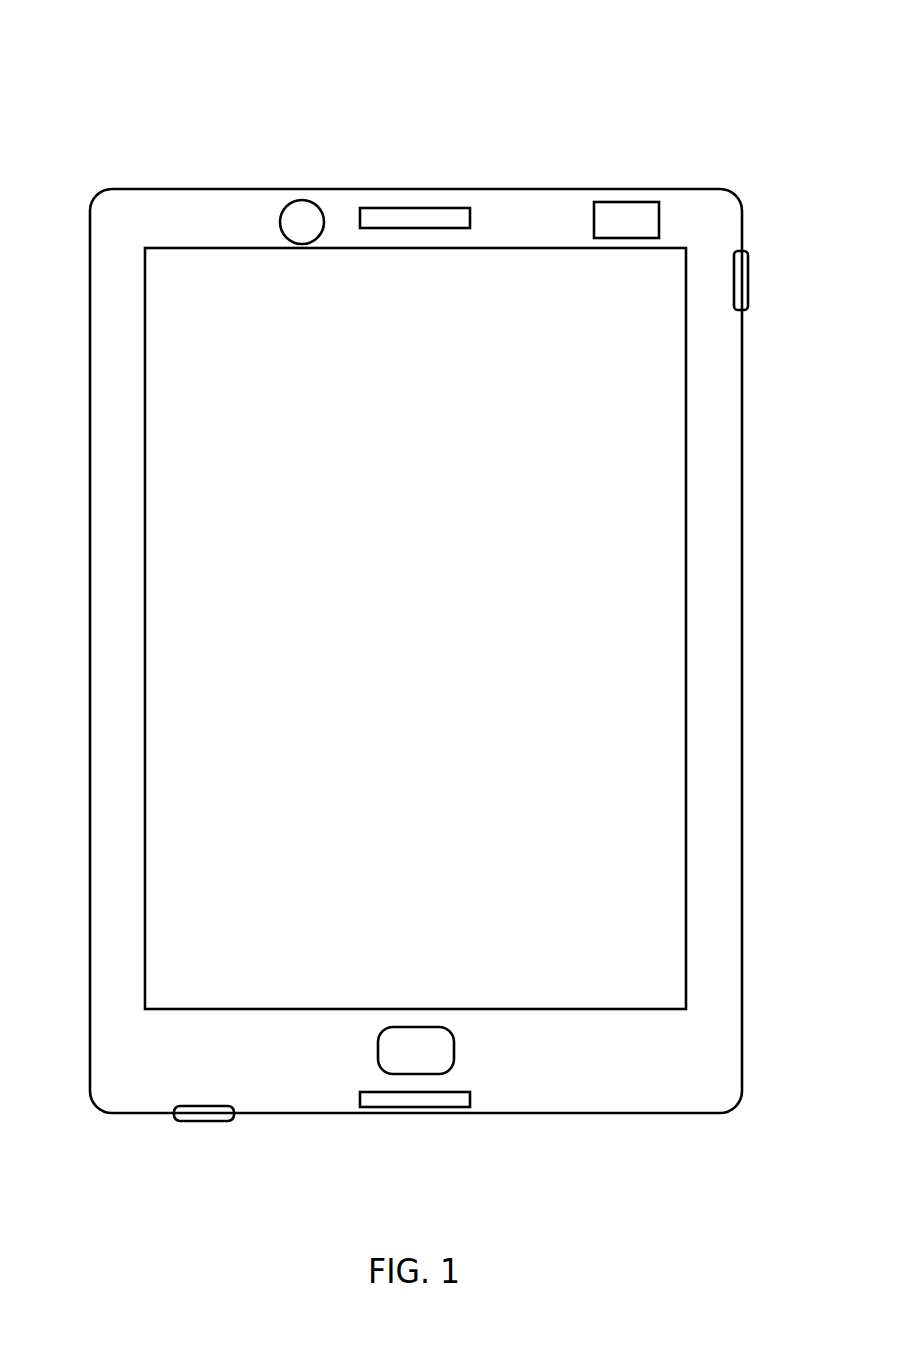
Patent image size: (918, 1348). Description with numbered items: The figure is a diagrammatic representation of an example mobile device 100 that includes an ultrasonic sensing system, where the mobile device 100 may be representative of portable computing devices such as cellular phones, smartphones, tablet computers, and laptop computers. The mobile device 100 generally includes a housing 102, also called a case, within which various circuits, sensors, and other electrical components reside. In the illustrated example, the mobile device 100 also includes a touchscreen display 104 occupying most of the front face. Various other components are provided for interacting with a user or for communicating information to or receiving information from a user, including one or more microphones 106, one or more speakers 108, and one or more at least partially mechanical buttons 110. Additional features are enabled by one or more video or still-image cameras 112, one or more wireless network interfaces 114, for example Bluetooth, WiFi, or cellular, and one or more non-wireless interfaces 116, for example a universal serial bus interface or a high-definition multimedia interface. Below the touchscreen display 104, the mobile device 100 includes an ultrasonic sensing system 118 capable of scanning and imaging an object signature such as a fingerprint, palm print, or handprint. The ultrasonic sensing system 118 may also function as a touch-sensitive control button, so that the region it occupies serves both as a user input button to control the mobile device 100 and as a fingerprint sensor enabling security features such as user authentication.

The mobile device 100 is at (186, 64).
The housing 102 is at (100, 382).
The touchscreen display 104 is at (185, 500).
The microphone 106 is at (413, 1097).
The speaker 108 is at (411, 218).
The mechanical button 110 is at (742, 277).
The camera 112 is at (302, 212).
The wireless network interface 114 is at (625, 218).
The non-wireless interface 116 is at (204, 1115).
The ultrasonic sensing system 118 is at (440, 1053).